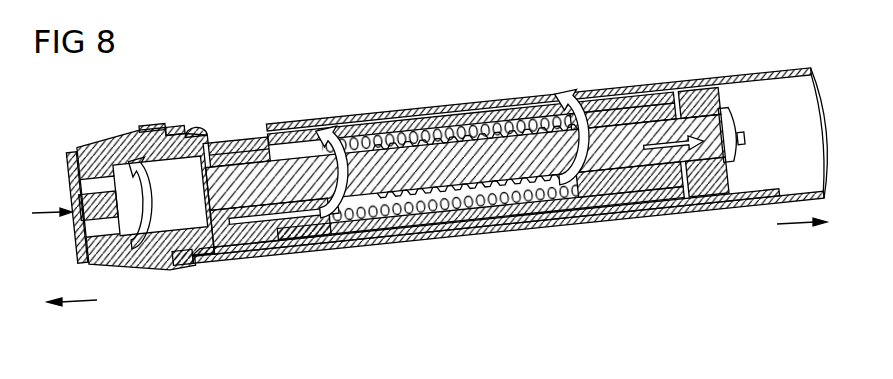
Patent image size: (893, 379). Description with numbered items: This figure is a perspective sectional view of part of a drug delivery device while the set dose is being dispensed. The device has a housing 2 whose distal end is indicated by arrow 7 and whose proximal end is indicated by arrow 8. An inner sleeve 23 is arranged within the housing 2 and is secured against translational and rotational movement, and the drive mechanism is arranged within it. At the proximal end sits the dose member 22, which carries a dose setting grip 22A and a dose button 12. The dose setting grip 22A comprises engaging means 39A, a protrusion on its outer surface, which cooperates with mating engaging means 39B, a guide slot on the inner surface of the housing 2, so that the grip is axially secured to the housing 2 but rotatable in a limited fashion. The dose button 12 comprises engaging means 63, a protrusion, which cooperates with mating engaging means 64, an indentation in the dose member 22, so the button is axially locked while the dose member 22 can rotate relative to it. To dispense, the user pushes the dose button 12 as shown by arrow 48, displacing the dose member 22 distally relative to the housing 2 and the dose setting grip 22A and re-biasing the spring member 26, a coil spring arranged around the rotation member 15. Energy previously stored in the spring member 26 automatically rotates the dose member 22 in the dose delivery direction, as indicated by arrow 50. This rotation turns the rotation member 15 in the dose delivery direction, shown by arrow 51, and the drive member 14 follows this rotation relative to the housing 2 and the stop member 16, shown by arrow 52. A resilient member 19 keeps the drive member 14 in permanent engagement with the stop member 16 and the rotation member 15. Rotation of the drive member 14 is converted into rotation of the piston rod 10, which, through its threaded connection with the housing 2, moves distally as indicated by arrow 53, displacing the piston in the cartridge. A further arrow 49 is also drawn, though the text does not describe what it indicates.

The housing 2 is at (397, 245).
The distal end 7 is at (790, 226).
The proximal end 8 is at (83, 303).
The piston rod 10 is at (477, 166).
The dose button 12 is at (73, 235).
The drive member 14 is at (607, 215).
The rotation member 15 is at (520, 226).
The stop member 16 is at (672, 214).
The resilient member 19 is at (697, 212).
The dose member 22 is at (230, 250).
The dose setting grip 22A is at (143, 140).
The inner sleeve 23 is at (443, 238).
The spring member 26 is at (429, 128).
The engaging means 39A is at (193, 137).
The engaging means 39B is at (187, 134).
The arrow 48 is at (50, 203).
The arrow 49 is at (264, 247).
The arrow 50 is at (156, 187).
The arrow 51 is at (343, 130).
The arrow 52 is at (574, 91).
The arrow 53 is at (687, 100).
The engaging means 63 is at (107, 262).
The engaging means 64 is at (73, 185).